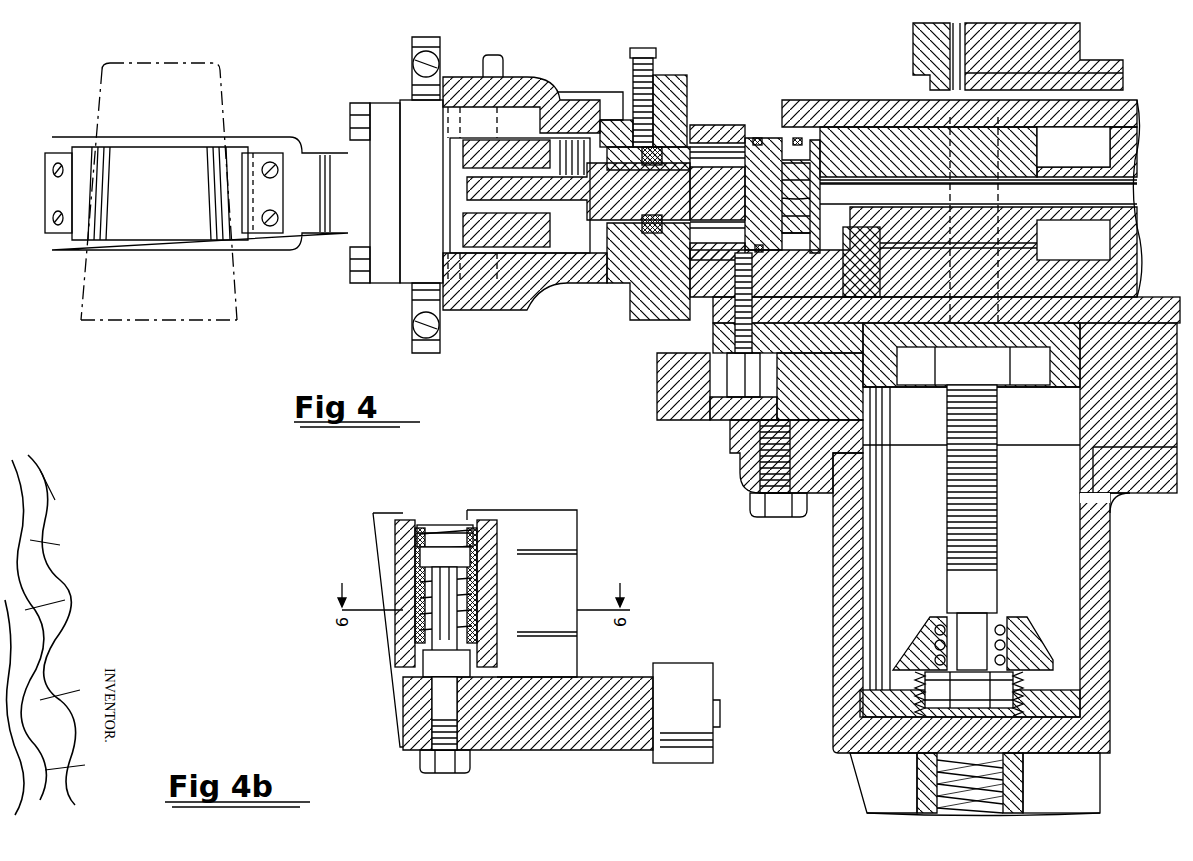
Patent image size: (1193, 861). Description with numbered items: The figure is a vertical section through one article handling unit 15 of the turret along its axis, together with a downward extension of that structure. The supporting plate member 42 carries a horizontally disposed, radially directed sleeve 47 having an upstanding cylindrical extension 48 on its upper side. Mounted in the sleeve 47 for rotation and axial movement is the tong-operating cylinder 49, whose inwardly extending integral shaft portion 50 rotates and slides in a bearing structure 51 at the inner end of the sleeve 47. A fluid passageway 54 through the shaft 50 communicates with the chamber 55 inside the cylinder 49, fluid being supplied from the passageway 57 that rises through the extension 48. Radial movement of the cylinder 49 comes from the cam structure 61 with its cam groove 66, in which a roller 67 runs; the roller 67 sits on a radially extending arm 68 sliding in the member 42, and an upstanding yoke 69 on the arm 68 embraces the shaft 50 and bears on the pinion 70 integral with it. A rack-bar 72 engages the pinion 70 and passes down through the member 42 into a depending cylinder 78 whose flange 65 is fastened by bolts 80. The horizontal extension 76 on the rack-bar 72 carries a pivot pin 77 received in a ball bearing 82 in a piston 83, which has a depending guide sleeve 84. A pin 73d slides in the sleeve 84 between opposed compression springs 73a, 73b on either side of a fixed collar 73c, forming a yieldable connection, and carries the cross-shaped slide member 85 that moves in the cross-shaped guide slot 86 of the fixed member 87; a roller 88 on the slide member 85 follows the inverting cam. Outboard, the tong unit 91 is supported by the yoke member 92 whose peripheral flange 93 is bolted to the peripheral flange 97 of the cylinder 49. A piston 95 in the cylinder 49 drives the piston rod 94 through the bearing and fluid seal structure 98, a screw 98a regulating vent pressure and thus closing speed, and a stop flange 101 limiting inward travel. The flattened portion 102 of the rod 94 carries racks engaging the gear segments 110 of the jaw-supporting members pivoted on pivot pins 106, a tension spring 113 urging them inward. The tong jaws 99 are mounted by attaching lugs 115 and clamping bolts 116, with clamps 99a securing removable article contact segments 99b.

In FIG. 4, the article handling unit 15 is at (378, 72).
In FIG. 4, the supporting plate member 42 is at (1137, 245).
In FIG. 4, the sleeve 47 is at (870, 101).
In FIG. 4, the upstanding cylindrical extension 48 is at (1080, 35).
In FIG. 4, the tong-operating cylinder 49 is at (727, 122).
In FIG. 4, the shaft portion 50 is at (1060, 150).
In FIG. 4, the bearing structure 51 is at (1130, 167).
In FIG. 4, the fluid passageway 54 is at (1130, 184).
In FIG. 4, the chamber 55 is at (742, 143).
In FIG. 4, the passageway 57 is at (1108, 87).
In FIG. 4, the cam structure 61 is at (660, 376).
In FIG. 4, the flange 65 is at (730, 463).
In FIG. 4, the cam groove 66 is at (770, 360).
In FIG. 4, the roller 67 is at (733, 385).
In FIG. 4, the radially extending arm 68 is at (1143, 298).
In FIG. 4, the yoke 69 is at (857, 322).
In FIG. 4, the pinion 70 is at (1040, 237).
In FIG. 4, the rack-bar 72 is at (997, 400).
In FIG. 4, the compression spring 73a is at (997, 790).
In FIG. 4B, the compression spring 73a is at (415, 541).
In FIG. 4B, the compression spring 73b is at (418, 643).
In FIG. 4B, the collar 73c is at (418, 558).
In FIG. 4B, the pin 73d is at (455, 640).
In FIG. 4, the horizontal extension 76 is at (947, 584).
In FIG. 4, the pivot pin 77 is at (995, 625).
In FIG. 4, the depending cylinder 78 is at (1108, 636).
In FIG. 4, the bolts 80 is at (800, 518).
In FIG. 4, the ball bearing 82 is at (1028, 620).
In FIG. 4, the piston 83 is at (912, 648).
In FIG. 4, the guide sleeve 84 is at (917, 768).
In FIG. 4B, the guide sleeve 84 is at (498, 530).
In FIG. 4B, the cross-shaped slide member 85 is at (533, 751).
In FIG. 4B, the cross-shaped guide slot 86 is at (437, 522).
In FIG. 4, the fixed member 87 is at (855, 768).
In FIG. 4B, the fixed member 87 is at (378, 524).
In FIG. 4B, the roller 88 is at (673, 764).
In FIG. 4, the tong unit 91 is at (254, 135).
In FIG. 4, the yoke member 92 is at (556, 306).
In FIG. 4, the peripheral flange 93 is at (632, 311).
In FIG. 4, the piston rod 94 is at (700, 222).
In FIG. 4, the piston 95 is at (789, 160).
In FIG. 4, the peripheral flange 97 is at (688, 84).
In FIG. 4, the bearing and fluid seal structure 98 is at (690, 150).
In FIG. 4, the screw 98a is at (660, 78).
In FIG. 4, the tong jaws 99 is at (72, 248).
In FIG. 4, the clamps 99a is at (265, 246).
In FIG. 4, the article contact segments 99b is at (80, 143).
In FIG. 4, the stop flange 101 is at (594, 150).
In FIG. 4, the flattened portion 102 is at (550, 195).
In FIG. 4, the pivot pin 106 is at (512, 40).
In FIG. 4, the gear segment 110 is at (467, 152).
In FIG. 4, the tension spring 113 is at (412, 343).
In FIG. 4, the attaching lugs 115 is at (388, 286).
In FIG. 4, the clamping bolts 116 is at (350, 273).